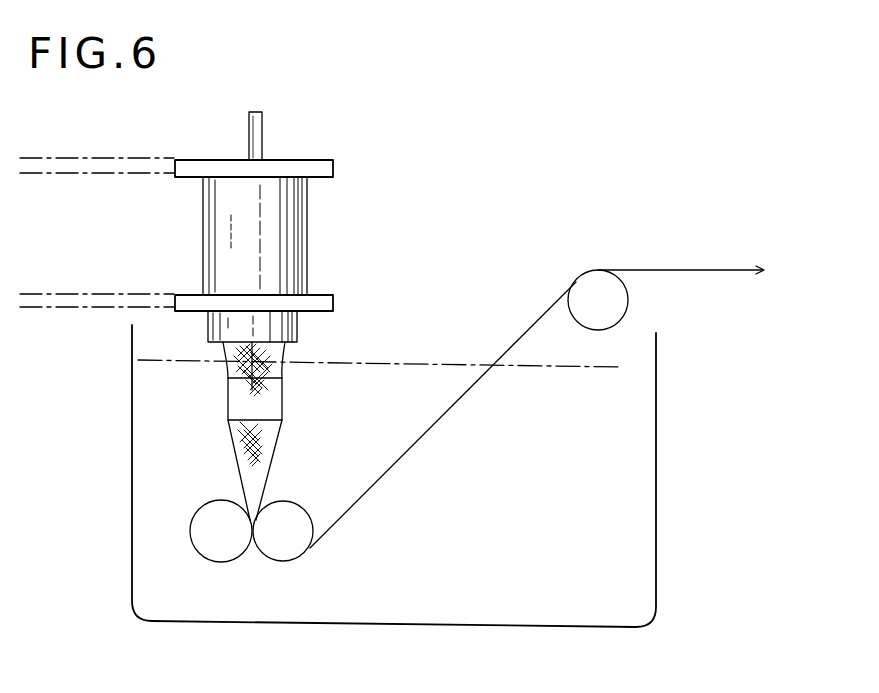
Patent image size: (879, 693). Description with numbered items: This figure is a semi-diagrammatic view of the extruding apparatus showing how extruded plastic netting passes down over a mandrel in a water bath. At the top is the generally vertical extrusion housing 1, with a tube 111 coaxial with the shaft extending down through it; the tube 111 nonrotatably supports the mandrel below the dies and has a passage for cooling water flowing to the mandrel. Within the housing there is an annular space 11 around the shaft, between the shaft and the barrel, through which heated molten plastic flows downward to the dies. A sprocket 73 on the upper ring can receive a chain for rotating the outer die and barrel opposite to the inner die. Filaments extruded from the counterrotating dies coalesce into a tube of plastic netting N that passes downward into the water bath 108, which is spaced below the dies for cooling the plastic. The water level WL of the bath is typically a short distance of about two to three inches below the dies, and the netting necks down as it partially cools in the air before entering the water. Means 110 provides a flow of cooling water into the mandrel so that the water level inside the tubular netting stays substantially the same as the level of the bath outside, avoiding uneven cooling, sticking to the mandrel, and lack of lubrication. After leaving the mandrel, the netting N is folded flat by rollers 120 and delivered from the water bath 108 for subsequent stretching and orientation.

The extrusion housing 1 is at (308, 238).
The annular space 11 is at (280, 360).
The sprocket 73 is at (317, 297).
The water bath 108 is at (656, 480).
The means for flow of cooling water into the mandrel 110 is at (220, 406).
The tube 111 is at (262, 145).
The rollers 120 is at (302, 500).
The plastic netting N is at (692, 270).
The water level WL is at (620, 367).